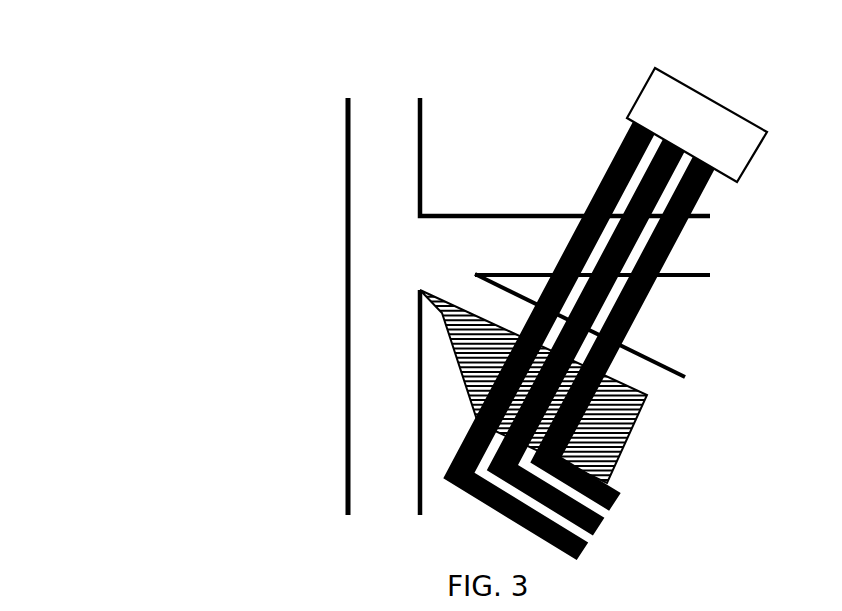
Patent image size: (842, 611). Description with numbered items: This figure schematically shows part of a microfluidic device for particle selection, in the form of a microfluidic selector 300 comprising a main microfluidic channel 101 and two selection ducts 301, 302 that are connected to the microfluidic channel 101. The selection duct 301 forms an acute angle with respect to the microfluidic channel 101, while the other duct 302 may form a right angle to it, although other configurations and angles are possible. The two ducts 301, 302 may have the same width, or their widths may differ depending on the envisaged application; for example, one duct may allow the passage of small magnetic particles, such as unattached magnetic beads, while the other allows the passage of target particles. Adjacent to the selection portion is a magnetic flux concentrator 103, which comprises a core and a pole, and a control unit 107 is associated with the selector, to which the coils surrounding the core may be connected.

The microfluidic selector 300 is at (176, 114).
The microfluidic channel 101 is at (347, 182).
The selection duct 302 is at (457, 214).
The selection duct 301 is at (662, 363).
The control unit 107 is at (605, 314).
The magnetic flux concentrator 103 is at (649, 451).